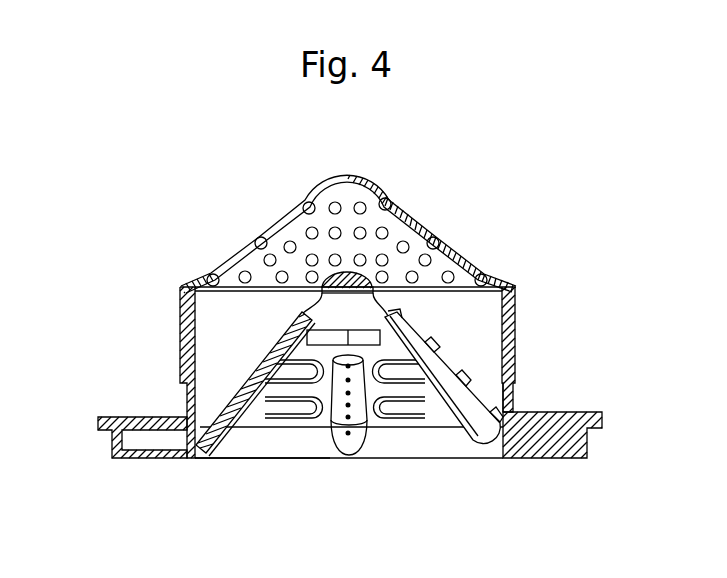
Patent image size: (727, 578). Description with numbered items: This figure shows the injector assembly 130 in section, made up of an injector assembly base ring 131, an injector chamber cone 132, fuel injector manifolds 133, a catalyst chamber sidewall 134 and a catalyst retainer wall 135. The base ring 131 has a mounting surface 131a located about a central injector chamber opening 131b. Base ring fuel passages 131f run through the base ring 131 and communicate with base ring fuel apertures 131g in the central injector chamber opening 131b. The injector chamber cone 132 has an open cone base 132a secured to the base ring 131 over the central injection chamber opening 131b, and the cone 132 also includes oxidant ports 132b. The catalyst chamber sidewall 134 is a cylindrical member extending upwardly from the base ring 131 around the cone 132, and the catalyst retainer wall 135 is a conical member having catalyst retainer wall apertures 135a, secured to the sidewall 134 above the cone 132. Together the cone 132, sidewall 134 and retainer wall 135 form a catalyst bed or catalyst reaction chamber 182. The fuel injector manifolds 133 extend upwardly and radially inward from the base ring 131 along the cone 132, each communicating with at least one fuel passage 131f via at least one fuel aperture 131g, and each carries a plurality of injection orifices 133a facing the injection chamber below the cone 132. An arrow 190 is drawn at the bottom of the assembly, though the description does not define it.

The injector assembly 130 is at (253, 188).
The injector assembly base ring 131 is at (112, 417).
The mounting surface 131a is at (553, 412).
The central injector chamber opening 131b is at (383, 445).
The base ring fuel passages 131f is at (162, 455).
The base ring fuel apertures 131g is at (205, 450).
The injector chamber cone 132 is at (398, 313).
The cone base 132a is at (503, 440).
The oxidant ports 132b is at (423, 337).
The fuel injector manifolds 133 is at (477, 441).
The injection orifices 133a is at (302, 373).
The catalyst chamber sidewall 134 is at (517, 298).
The catalyst retainer wall 135 is at (355, 172).
The catalyst retainer wall apertures 135a is at (388, 198).
The catalyst reaction chamber 182 is at (247, 327).
The flow direction 190 is at (342, 472).